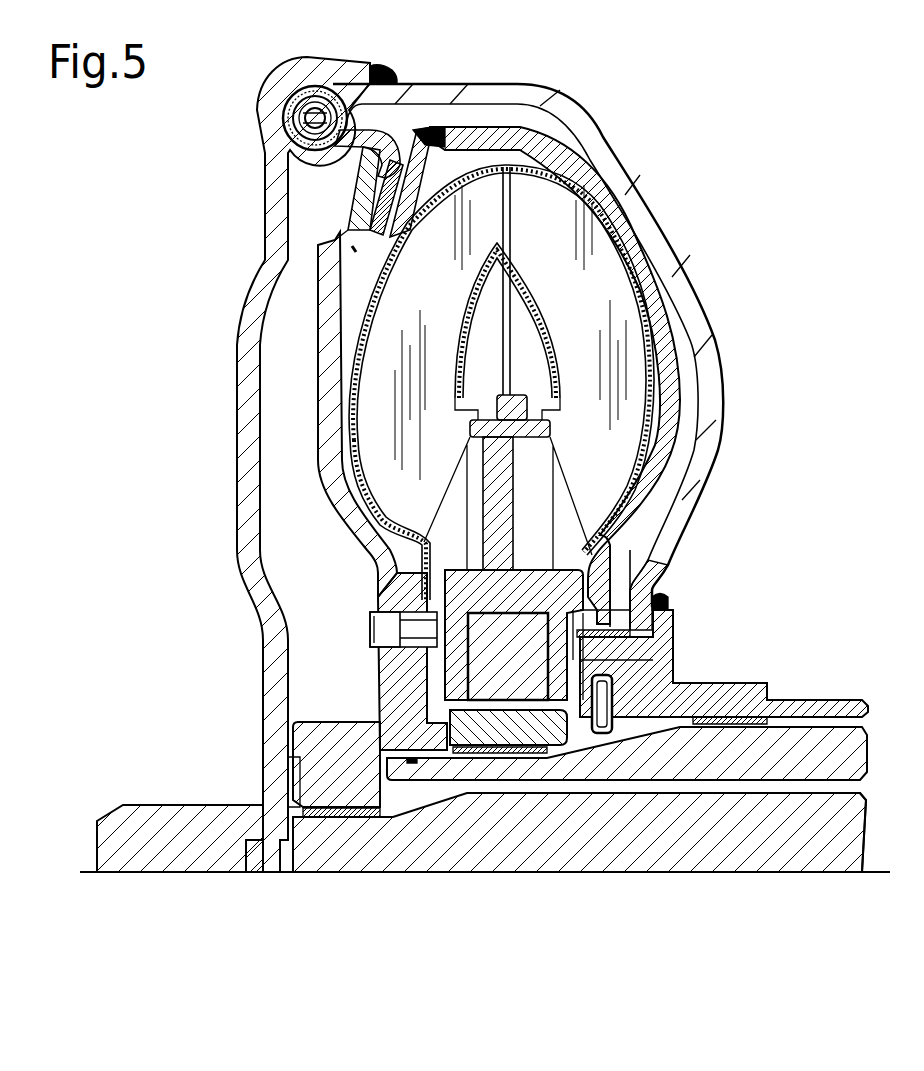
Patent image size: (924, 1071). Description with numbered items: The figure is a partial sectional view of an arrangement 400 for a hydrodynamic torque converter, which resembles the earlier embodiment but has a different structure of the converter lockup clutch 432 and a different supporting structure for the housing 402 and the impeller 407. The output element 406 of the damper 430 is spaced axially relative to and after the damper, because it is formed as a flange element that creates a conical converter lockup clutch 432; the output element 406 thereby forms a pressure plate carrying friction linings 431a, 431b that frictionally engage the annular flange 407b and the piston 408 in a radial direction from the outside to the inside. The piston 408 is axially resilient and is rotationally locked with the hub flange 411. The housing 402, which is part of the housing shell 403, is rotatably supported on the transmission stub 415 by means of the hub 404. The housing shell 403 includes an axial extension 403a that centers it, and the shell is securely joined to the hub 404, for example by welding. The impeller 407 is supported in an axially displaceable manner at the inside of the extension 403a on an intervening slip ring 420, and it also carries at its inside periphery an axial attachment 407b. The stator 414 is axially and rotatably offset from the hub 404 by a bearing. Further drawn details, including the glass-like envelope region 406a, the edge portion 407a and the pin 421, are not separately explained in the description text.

The arrangement 400 is at (748, 158).
The housing 402 is at (560, 110).
The housing shell 403 is at (590, 147).
The axial extension 403a is at (622, 650).
The hub 404 is at (853, 707).
The output element 406 is at (360, 160).
The glass envelope 406a is at (407, 222).
The impeller 407 is at (672, 380).
The shell lower edge 407a is at (676, 555).
The annular flange 407b is at (438, 128).
The piston 408 is at (348, 196).
The hub flange 411 is at (393, 597).
The stator 414 is at (597, 538).
The transmission stub 415 is at (808, 750).
The slip ring 420 is at (660, 608).
The locating pin 421 is at (602, 703).
The damper 430 is at (293, 156).
The friction lining 431a is at (378, 64).
The friction lining 431b is at (398, 215).
The converter lockup clutch 432 is at (347, 259).